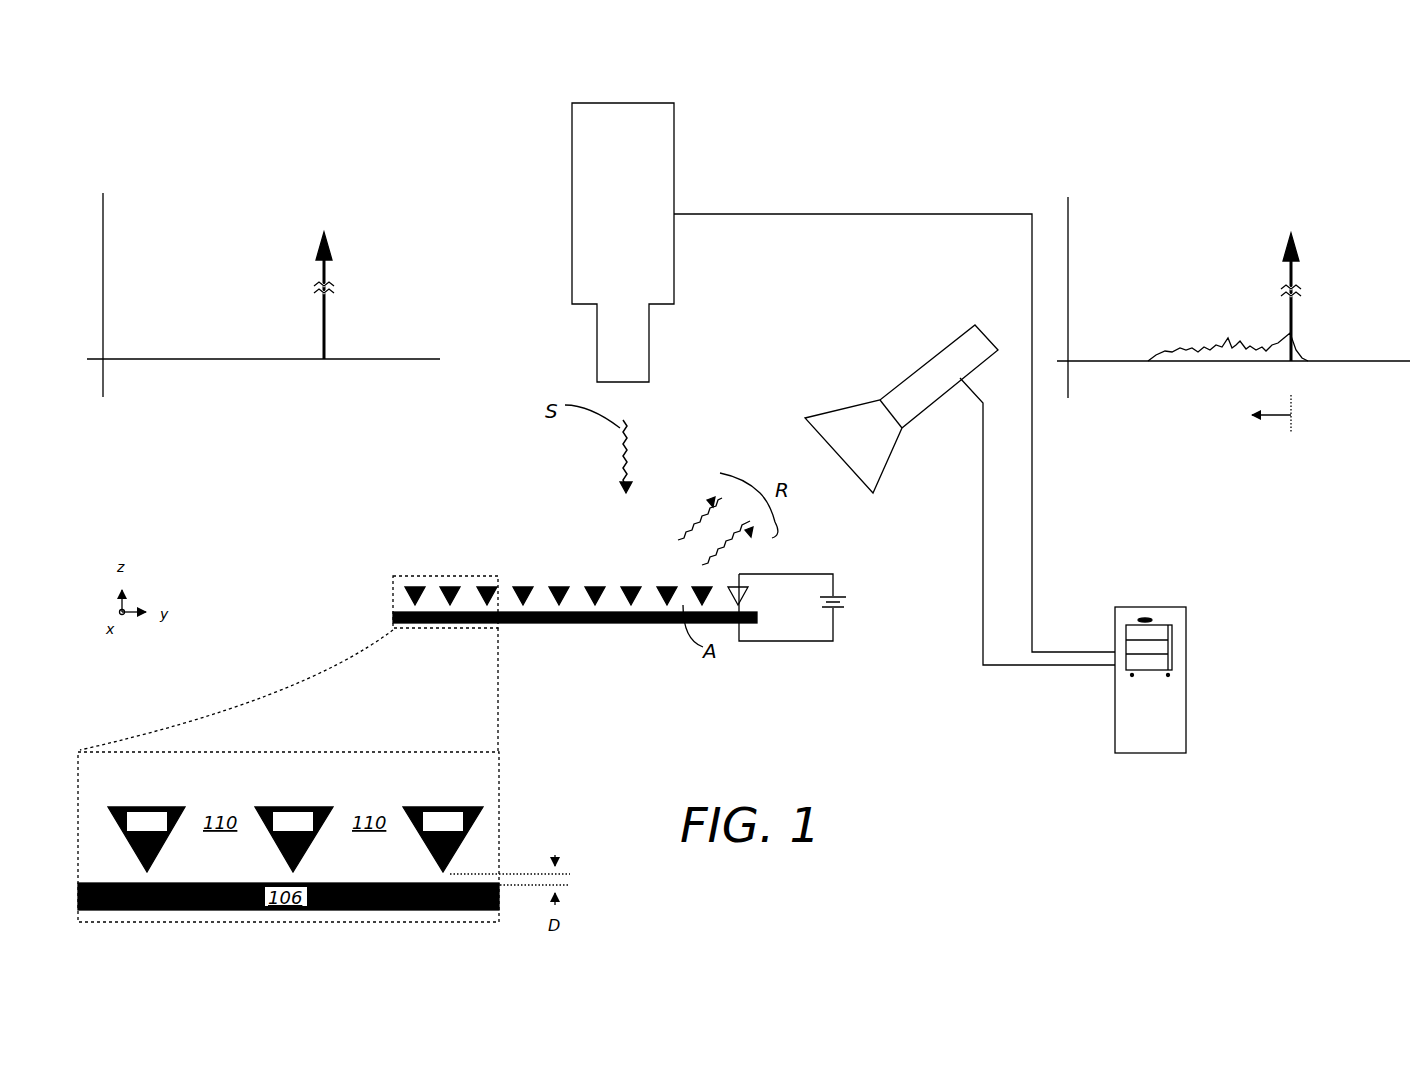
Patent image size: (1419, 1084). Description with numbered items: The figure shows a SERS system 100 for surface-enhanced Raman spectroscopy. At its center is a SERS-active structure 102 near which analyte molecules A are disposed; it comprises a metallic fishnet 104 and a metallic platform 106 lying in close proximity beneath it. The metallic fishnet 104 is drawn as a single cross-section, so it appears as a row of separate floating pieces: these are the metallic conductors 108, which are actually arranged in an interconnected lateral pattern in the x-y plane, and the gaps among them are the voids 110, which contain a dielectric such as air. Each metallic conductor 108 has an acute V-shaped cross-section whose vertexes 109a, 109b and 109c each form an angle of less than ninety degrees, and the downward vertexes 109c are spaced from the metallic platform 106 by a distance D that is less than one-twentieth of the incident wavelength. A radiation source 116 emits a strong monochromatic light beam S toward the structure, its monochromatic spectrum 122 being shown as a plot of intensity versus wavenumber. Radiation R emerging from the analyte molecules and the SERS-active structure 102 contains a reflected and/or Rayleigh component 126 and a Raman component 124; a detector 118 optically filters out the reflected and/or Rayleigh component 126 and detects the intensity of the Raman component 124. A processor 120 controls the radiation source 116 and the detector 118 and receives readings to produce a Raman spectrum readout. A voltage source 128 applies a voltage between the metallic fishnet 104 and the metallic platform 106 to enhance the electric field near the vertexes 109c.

The SERS system 100 is at (889, 150).
The SERS-active structure 102 is at (502, 607).
The metallic fishnet 104 is at (532, 607).
The metallic platform 106 is at (393, 616).
The metallic conductors 108 is at (574, 607).
The vertex 109a is at (325, 818).
The vertex 109b is at (325, 818).
The vertex 109c is at (150, 870).
The voids 110 is at (545, 598).
The radiation source 116 is at (678, 143).
The detector 118 is at (836, 405).
The processor 120 is at (1137, 600).
The monochromatic spectrum 122 is at (333, 272).
The Raman component 124 is at (1216, 340).
The reflected and/or Rayleigh component 126 is at (1298, 272).
The voltage source 128 is at (850, 615).